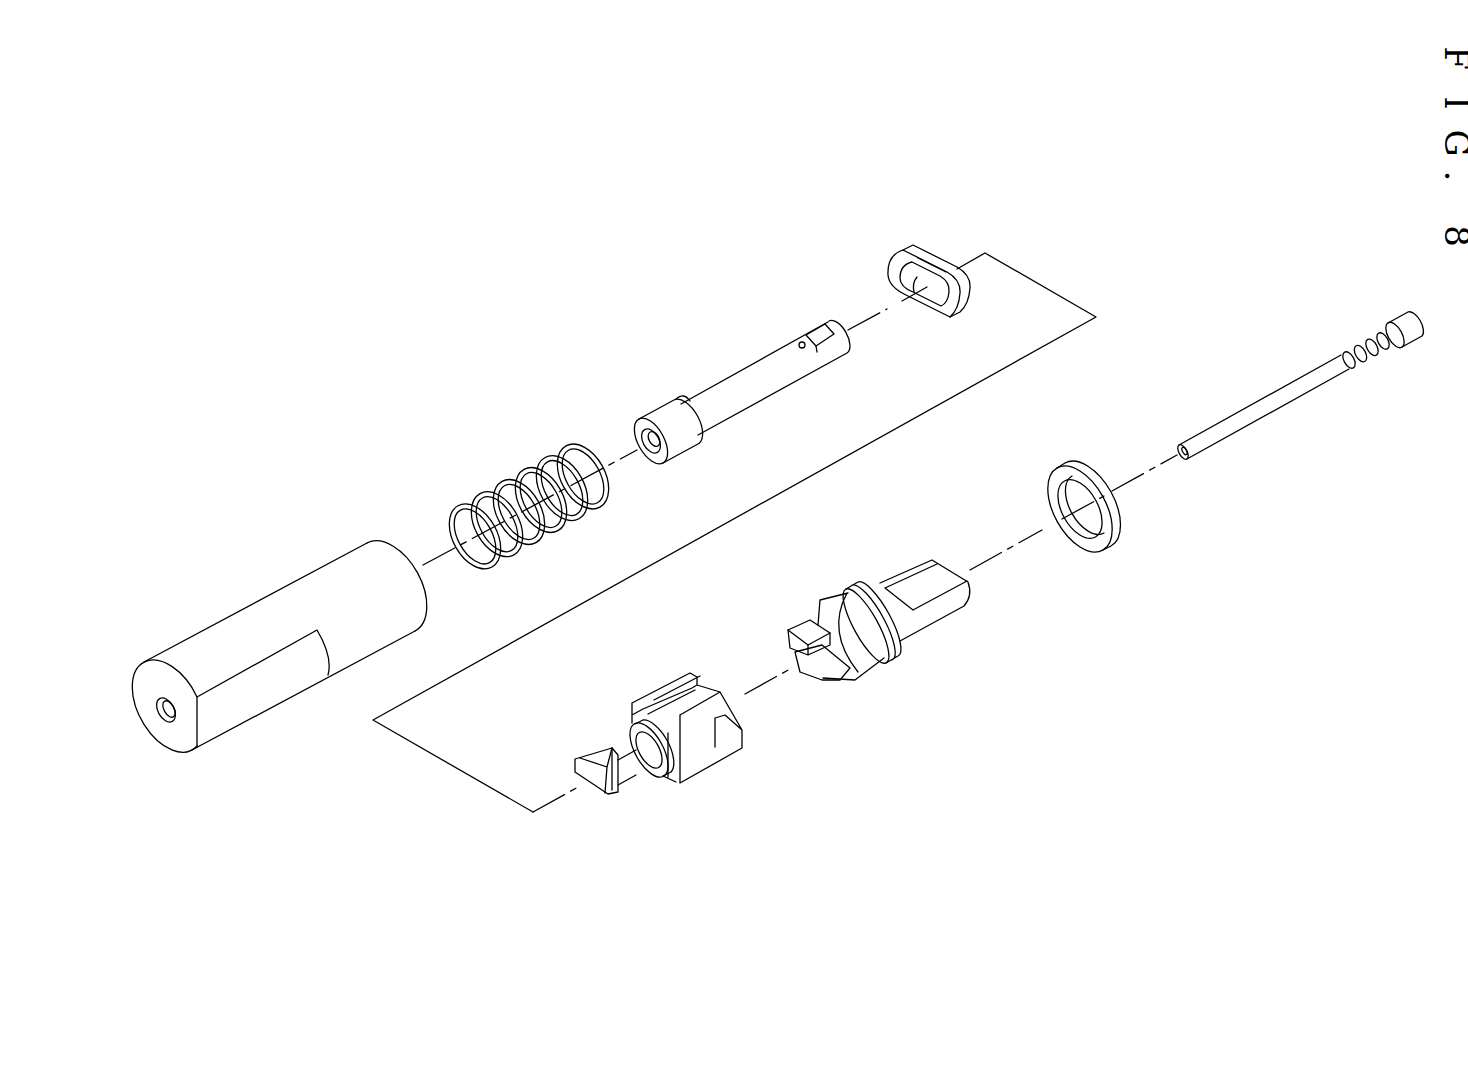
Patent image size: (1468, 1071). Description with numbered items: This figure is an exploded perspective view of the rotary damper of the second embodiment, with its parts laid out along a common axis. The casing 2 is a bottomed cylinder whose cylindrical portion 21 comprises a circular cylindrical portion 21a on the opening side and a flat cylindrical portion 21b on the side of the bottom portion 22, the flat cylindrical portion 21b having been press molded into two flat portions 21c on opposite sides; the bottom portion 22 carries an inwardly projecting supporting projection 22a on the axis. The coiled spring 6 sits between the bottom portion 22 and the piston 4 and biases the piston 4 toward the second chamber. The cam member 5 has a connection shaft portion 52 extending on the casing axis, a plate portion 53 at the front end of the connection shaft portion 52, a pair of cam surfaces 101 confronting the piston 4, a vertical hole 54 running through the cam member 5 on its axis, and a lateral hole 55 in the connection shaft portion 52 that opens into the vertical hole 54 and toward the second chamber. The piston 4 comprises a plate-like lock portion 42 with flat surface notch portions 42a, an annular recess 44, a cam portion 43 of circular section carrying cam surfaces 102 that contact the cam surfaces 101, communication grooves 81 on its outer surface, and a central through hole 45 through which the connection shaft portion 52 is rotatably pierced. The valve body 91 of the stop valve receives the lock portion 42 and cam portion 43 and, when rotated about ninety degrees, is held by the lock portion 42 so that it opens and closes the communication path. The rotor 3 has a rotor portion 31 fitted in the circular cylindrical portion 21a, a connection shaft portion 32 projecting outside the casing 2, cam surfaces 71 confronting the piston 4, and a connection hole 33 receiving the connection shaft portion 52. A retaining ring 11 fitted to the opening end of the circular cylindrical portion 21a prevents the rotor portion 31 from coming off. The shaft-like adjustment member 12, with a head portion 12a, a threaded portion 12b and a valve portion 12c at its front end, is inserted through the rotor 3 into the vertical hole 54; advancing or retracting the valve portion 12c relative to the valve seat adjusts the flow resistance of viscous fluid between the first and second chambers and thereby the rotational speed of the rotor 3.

The casing 2 is at (205, 615).
The cylindrical portion 21 is at (362, 502).
The circular cylindrical portion 21a is at (336, 560).
The flat cylindrical portion 21b is at (242, 606).
The flat portions 21c is at (270, 693).
The bottom portion 22 is at (161, 730).
The coiled spring 6 is at (515, 480).
The cam member 5 is at (656, 400).
The connection shaft portion 52 is at (737, 372).
The plate portion 53 is at (820, 338).
The vertical hole 54 is at (652, 452).
The lateral hole 55 is at (800, 344).
The cam surfaces 101 is at (692, 416).
The valve body 91 is at (886, 272).
The rotor 3 is at (905, 664).
The rotor portion 31 is at (852, 613).
The connection shaft portion 32 is at (957, 600).
The connection hole 33 is at (820, 655).
The cam surfaces 71 is at (836, 636).
The supporting projection 22a is at (919, 580).
The piston 4 is at (699, 784).
The lock portion 42 is at (660, 780).
The flat surface notch portions 42a is at (627, 727).
The cam portion 43 is at (623, 790).
The annular recess 44 is at (660, 705).
The through hole 45 is at (577, 767).
The communication grooves 81 is at (690, 678).
The cam surfaces 102 is at (590, 750).
The retaining ring 11 is at (1087, 548).
The adjustment member 12 is at (1294, 414).
The head portion 12a is at (1406, 316).
The threaded portion 12b is at (1368, 357).
The valve portion 12c is at (1186, 458).